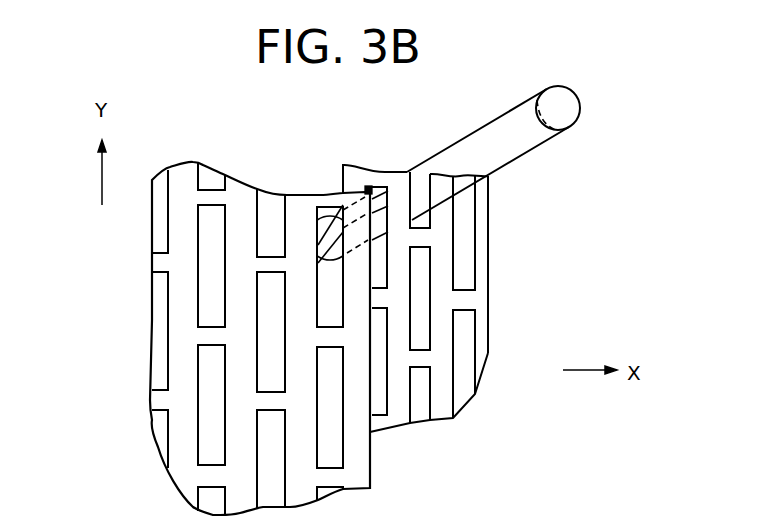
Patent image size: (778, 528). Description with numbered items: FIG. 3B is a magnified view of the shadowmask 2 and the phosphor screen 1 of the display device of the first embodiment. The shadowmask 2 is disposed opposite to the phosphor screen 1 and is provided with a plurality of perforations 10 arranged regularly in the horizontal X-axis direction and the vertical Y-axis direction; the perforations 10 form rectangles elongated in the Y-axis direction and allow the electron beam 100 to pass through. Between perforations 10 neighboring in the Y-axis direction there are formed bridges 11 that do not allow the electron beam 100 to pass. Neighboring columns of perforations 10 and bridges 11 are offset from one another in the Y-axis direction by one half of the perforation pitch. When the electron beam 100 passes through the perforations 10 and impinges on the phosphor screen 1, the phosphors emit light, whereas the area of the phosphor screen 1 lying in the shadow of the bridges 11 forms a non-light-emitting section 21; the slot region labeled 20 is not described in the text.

The phosphor screen 1 is at (177, 433).
The shadowmask 2 is at (450, 298).
The perforations 10 is at (370, 185).
The bridges 11 is at (382, 298).
The slot 20 is at (340, 442).
The non-light-emitting section 21 is at (340, 475).
The electron beam 100 is at (540, 145).